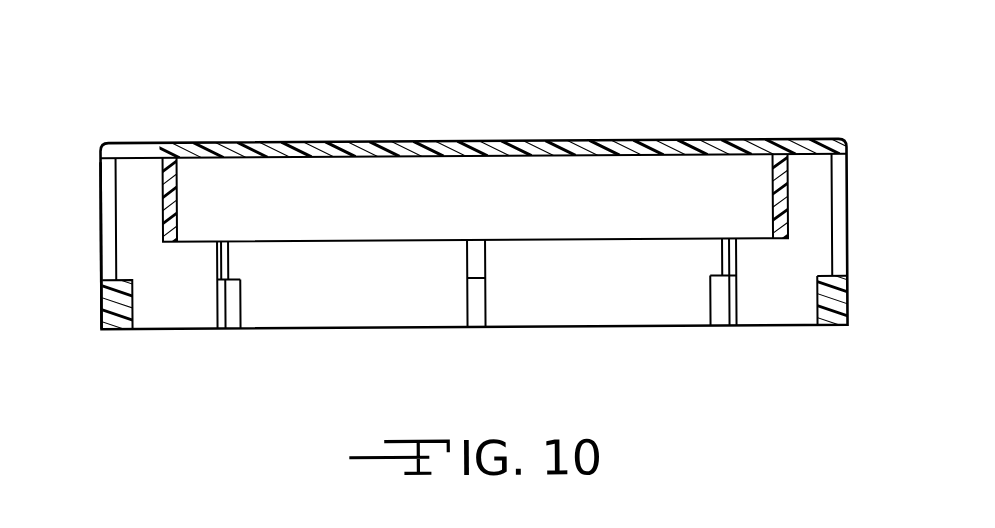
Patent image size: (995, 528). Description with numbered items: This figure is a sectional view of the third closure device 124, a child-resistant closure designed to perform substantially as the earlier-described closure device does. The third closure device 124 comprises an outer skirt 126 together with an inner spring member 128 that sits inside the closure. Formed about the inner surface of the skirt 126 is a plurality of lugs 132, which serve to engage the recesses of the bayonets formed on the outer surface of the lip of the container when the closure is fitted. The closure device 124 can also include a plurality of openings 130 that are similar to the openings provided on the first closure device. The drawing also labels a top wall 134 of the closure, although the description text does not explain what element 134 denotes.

The cap assembly 124 is at (652, 97).
The outer skirt wall 126 is at (102, 255).
The inner insert body 128 is at (163, 226).
The support walls 130 is at (102, 228).
The feet 132 is at (128, 315).
The top wall 134 is at (450, 140).